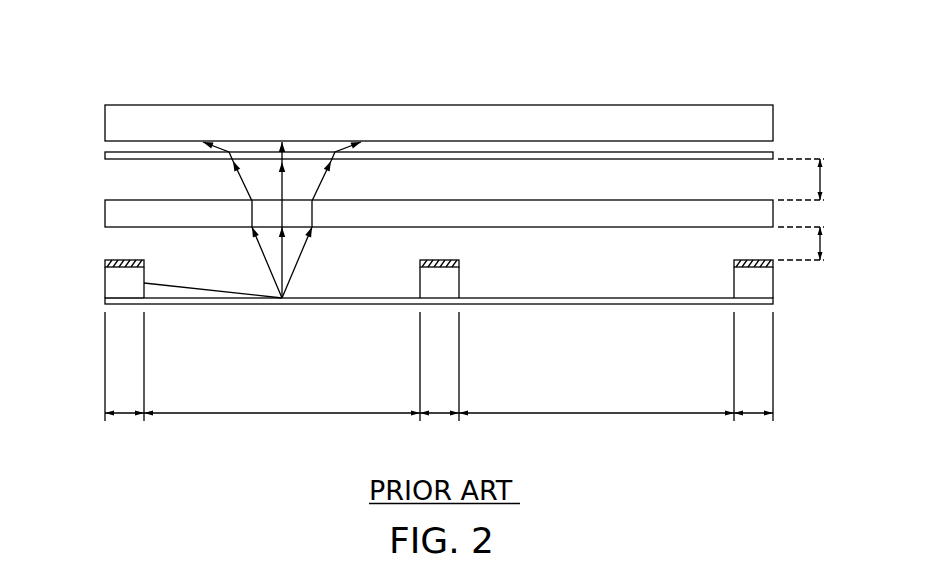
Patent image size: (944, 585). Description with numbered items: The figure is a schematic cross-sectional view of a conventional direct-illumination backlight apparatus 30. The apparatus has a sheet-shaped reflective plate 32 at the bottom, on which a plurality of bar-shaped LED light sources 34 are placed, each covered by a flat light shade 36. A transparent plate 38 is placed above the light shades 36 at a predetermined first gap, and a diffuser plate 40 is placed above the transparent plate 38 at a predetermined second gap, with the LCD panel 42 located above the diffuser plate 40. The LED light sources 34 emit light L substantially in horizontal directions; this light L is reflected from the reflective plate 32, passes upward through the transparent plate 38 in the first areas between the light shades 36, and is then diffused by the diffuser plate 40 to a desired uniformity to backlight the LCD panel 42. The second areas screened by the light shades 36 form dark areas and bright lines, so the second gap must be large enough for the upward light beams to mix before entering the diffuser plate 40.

The direct-illumination backlight apparatus 30 is at (542, 44).
The reflective plate 32 is at (348, 304).
The bar-shaped LED light source 34 is at (110, 285).
The light shade 36 is at (106, 263).
The transparent plate 38 is at (105, 217).
The diffuser plate 40 is at (105, 157).
The LCD panel 42 is at (122, 112).
The light L is at (202, 290).